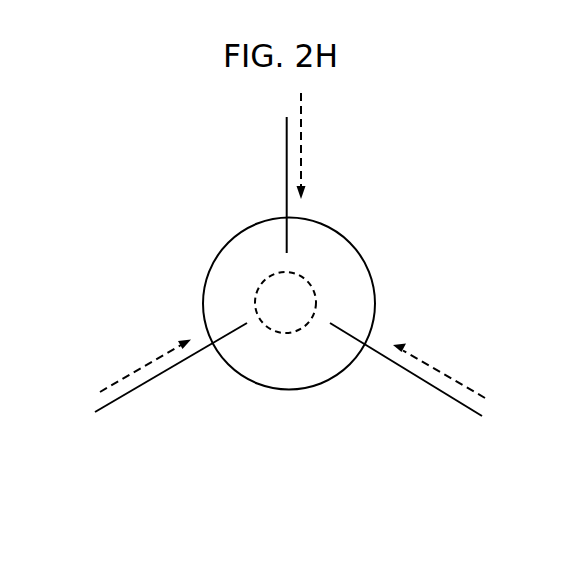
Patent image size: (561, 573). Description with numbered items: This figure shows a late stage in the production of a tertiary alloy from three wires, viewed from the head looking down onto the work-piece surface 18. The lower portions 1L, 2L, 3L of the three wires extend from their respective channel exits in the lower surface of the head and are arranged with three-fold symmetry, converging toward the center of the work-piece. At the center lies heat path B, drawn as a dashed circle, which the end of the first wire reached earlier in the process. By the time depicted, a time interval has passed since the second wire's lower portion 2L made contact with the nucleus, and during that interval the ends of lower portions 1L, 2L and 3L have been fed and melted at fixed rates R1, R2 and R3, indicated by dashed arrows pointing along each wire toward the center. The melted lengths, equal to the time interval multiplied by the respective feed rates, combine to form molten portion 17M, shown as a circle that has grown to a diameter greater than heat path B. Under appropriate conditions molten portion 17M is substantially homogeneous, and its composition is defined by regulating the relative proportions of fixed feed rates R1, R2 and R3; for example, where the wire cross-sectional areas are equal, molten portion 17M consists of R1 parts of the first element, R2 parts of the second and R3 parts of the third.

The lower portion of wire 1 1L is at (287, 169).
The lower portion of wire 2 2L is at (430, 386).
The lower portion of wire 3 3L is at (137, 390).
The molten portion 17M is at (340, 232).
The work-piece surface 18 is at (530, 167).
The heat path B is at (300, 300).
The fixed feed rate of wire 1 R1 is at (320, 146).
The fixed feed rate of wire 2 R2 is at (439, 361).
The fixed feed rate of wire 3 R3 is at (145, 356).